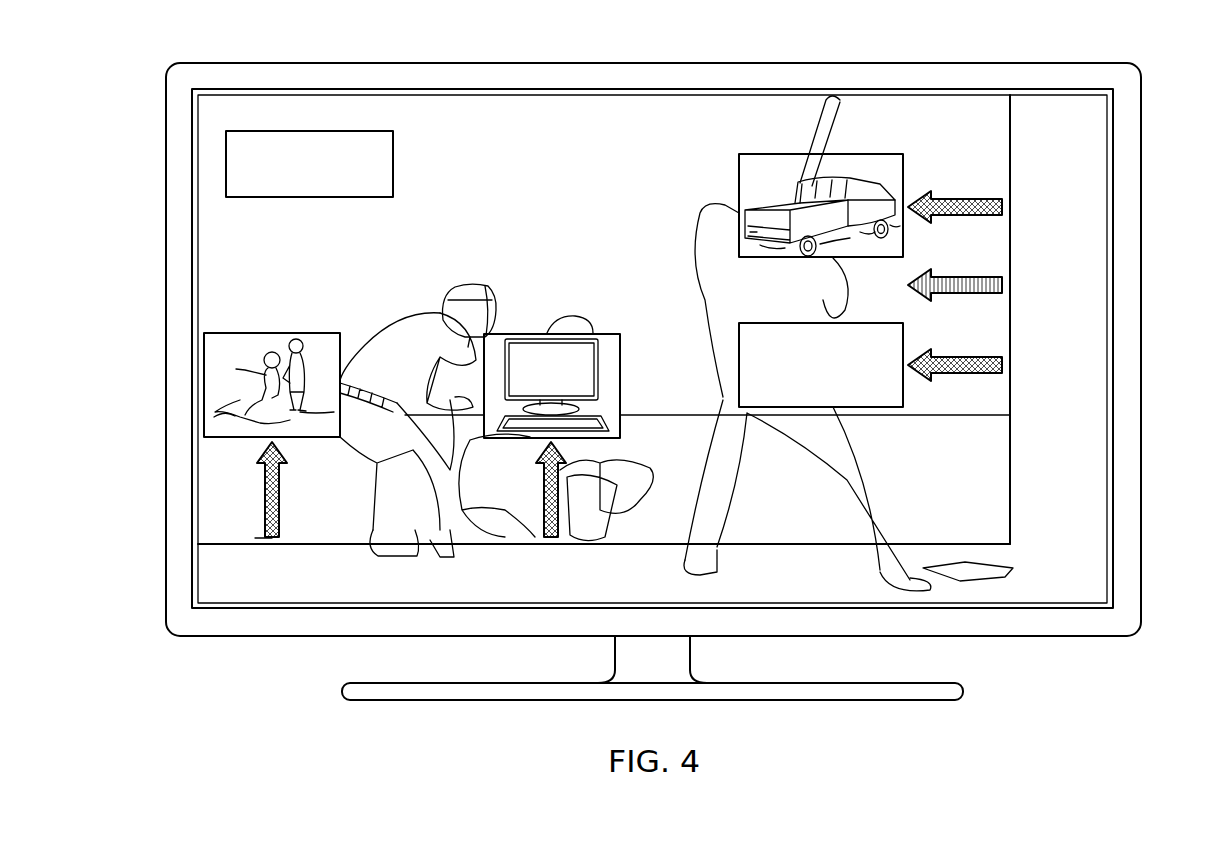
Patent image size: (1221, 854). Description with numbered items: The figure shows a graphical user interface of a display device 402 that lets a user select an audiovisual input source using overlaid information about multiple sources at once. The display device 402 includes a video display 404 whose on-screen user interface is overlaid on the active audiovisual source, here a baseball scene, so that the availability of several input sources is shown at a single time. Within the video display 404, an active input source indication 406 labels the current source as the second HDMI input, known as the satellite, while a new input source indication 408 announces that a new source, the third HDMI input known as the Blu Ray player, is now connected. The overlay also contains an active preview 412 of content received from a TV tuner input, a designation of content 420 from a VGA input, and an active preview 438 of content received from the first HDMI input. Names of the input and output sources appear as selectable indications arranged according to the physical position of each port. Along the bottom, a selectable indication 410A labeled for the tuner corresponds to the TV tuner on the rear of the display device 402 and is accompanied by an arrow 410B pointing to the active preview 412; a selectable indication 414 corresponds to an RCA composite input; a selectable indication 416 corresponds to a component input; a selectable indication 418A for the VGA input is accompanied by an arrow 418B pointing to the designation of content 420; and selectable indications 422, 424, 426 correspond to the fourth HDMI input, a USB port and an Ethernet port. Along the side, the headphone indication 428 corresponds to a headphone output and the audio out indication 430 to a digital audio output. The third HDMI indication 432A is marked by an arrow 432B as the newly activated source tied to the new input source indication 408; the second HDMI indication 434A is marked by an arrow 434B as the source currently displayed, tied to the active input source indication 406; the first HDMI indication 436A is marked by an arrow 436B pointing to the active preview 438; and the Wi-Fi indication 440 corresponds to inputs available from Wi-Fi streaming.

The display device 402 is at (653, 63).
The video display 404 is at (220, 281).
The active input source indication 406 is at (308, 131).
The new input source indication 408 is at (862, 323).
The selectable indication 410A is at (271, 590).
The arrow 410B is at (280, 497).
The active preview 412 is at (271, 333).
The selectable indication 414 is at (344, 590).
The selectable indication 416 is at (447, 590).
The selectable indication 418A is at (551, 590).
The arrow 418B is at (543, 491).
The designation of content 420 is at (621, 372).
The selectable indication 422 is at (653, 590).
The selectable indication 424 is at (741, 590).
The selectable indication 426 is at (829, 590).
The selectable indication 428 is at (1100, 487).
The selectable indication 430 is at (1105, 437).
The selectable indication 432A is at (1092, 357).
The arrow 432B is at (968, 350).
The selectable indication 434A is at (1090, 289).
The arrow 434B is at (968, 270).
The selectable indication 436A is at (1088, 200).
The arrow 436B is at (968, 191).
The active preview 438 is at (862, 154).
The selectable indication 440 is at (1082, 137).